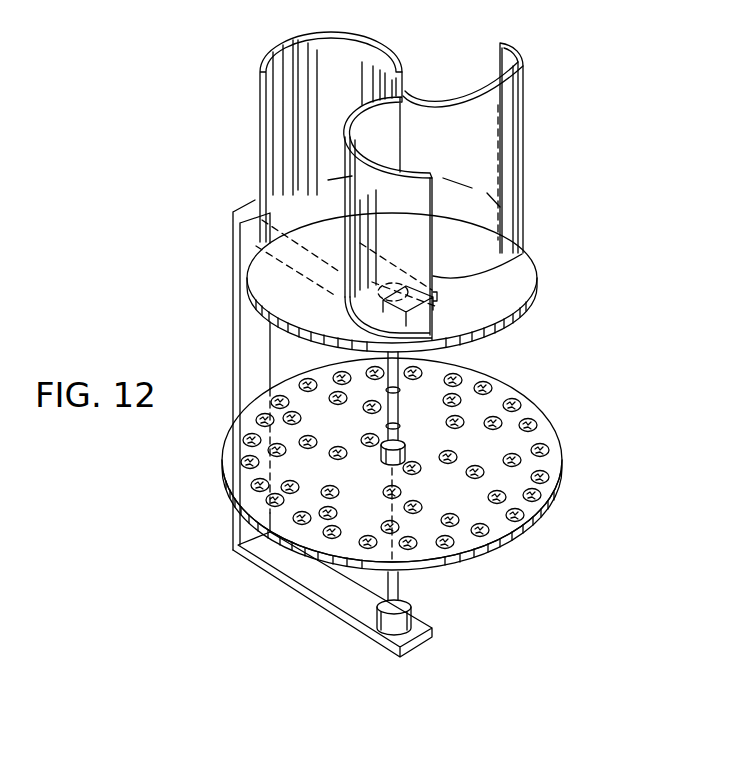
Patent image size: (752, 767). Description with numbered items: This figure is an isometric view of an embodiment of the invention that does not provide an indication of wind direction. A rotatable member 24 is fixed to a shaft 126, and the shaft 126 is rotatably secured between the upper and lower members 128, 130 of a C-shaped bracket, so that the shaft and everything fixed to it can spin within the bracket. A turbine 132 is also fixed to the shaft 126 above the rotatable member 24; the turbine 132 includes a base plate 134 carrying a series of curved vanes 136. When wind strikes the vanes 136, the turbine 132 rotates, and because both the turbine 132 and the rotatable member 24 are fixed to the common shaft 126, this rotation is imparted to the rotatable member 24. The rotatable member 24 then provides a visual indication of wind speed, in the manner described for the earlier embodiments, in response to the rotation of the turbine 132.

The rotatable member 24 is at (583, 446).
The shaft 126 is at (399, 587).
The upper member 128 is at (338, 292).
The lower member 130 is at (330, 613).
The turbine 132 is at (469, 172).
The base plate 134 is at (530, 298).
The curved vanes 136 is at (380, 55).